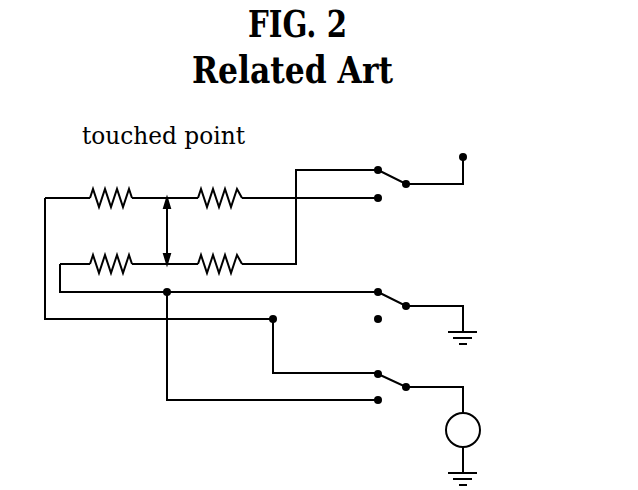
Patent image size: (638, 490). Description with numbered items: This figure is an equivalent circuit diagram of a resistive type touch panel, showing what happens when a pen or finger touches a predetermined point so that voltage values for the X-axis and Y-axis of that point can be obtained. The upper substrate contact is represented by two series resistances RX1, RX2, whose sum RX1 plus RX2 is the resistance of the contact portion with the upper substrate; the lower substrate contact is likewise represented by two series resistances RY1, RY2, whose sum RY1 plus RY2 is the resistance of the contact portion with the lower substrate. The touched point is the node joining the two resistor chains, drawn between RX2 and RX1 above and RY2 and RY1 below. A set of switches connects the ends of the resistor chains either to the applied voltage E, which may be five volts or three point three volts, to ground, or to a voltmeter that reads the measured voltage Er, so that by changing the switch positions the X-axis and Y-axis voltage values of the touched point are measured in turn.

The X-axis contact resistance portion RX1 is at (220, 183).
The X-axis contact resistance portion RX2 is at (111, 183).
The Y-axis contact resistance portion RY1 is at (220, 249).
The Y-axis contact resistance portion RY2 is at (111, 249).
The applied voltage E is at (465, 143).
The measured voltage Er is at (478, 449).